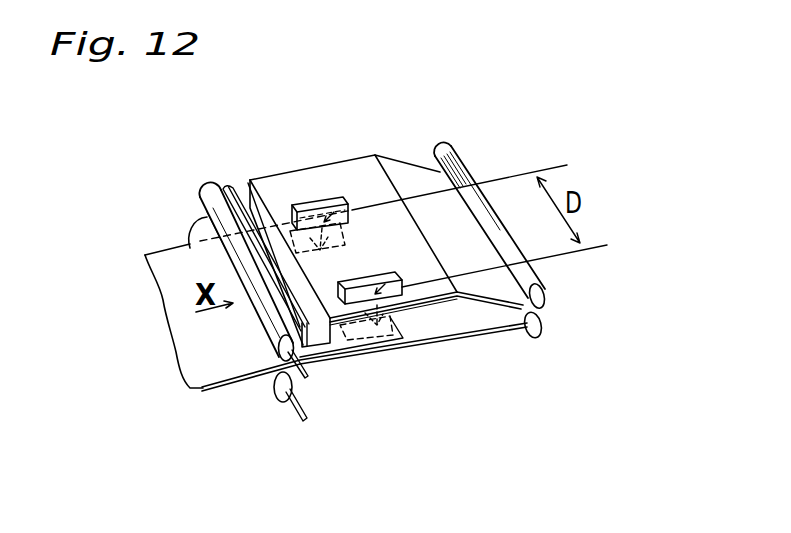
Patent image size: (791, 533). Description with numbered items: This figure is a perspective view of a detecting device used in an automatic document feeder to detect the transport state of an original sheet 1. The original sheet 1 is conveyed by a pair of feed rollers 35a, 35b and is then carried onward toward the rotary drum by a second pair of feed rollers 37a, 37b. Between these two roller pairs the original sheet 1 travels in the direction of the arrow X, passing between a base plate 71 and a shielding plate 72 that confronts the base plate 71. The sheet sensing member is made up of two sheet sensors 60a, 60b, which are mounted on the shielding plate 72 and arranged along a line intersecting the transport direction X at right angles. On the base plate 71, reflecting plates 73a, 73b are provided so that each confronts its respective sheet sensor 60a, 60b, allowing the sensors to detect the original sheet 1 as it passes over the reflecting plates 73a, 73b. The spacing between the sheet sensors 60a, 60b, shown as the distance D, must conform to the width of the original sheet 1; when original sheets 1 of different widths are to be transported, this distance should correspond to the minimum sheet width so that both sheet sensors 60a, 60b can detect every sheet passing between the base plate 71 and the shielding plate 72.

The original sheet 1 is at (233, 363).
The feed roller 35a is at (305, 382).
The feed roller 35b is at (277, 397).
The feed roller 37a is at (544, 296).
The feed roller 37b is at (542, 328).
The sheet sensor 60a is at (381, 279).
The sheet sensor 60b is at (304, 207).
The base plate 71 is at (460, 320).
The shielding plate 72 is at (498, 283).
The reflecting plate 73a is at (377, 340).
The reflecting plate 73b is at (344, 234).